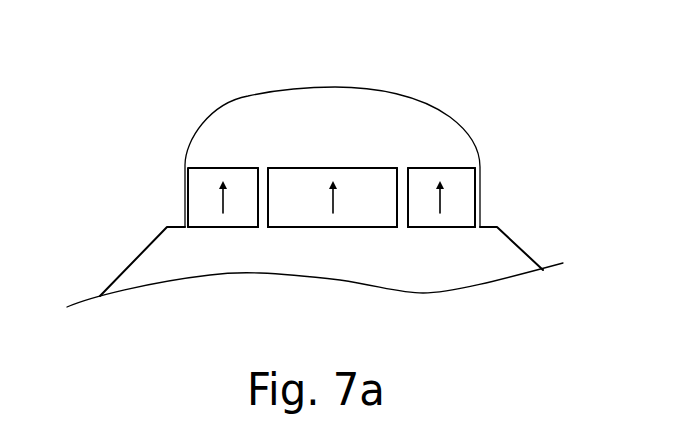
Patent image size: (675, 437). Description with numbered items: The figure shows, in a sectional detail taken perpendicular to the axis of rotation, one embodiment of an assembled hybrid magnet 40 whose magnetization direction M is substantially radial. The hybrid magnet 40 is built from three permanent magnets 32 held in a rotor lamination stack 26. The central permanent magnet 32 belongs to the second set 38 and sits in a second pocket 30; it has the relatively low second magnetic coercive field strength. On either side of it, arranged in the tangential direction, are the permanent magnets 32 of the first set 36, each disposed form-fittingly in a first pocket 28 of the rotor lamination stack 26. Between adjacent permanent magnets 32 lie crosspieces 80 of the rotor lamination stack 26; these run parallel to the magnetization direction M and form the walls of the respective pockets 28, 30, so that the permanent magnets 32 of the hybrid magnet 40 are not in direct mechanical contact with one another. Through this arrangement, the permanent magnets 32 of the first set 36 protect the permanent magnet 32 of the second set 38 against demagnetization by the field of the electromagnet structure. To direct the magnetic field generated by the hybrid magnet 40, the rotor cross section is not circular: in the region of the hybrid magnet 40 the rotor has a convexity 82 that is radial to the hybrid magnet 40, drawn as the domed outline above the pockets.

The rotor lamination stack 26 is at (493, 267).
The first pocket 28 is at (440, 170).
The second pocket 30 is at (380, 228).
The permanent magnet 32 is at (247, 215).
The first set 36 is at (462, 218).
The second set 38 is at (358, 182).
The hybrid magnet 40 is at (117, 154).
The crosspiece 80 is at (260, 198).
The convexity 82 is at (283, 112).
The magnetization direction M is at (447, 202).